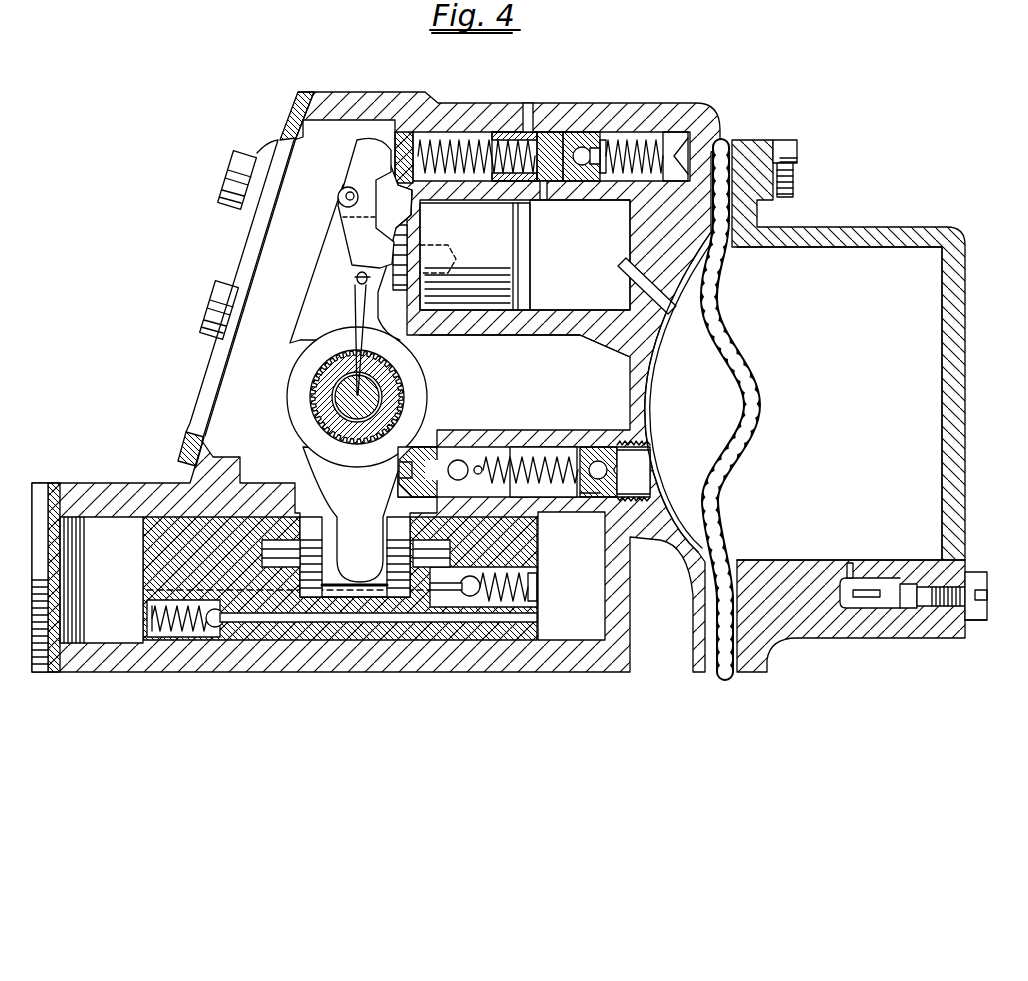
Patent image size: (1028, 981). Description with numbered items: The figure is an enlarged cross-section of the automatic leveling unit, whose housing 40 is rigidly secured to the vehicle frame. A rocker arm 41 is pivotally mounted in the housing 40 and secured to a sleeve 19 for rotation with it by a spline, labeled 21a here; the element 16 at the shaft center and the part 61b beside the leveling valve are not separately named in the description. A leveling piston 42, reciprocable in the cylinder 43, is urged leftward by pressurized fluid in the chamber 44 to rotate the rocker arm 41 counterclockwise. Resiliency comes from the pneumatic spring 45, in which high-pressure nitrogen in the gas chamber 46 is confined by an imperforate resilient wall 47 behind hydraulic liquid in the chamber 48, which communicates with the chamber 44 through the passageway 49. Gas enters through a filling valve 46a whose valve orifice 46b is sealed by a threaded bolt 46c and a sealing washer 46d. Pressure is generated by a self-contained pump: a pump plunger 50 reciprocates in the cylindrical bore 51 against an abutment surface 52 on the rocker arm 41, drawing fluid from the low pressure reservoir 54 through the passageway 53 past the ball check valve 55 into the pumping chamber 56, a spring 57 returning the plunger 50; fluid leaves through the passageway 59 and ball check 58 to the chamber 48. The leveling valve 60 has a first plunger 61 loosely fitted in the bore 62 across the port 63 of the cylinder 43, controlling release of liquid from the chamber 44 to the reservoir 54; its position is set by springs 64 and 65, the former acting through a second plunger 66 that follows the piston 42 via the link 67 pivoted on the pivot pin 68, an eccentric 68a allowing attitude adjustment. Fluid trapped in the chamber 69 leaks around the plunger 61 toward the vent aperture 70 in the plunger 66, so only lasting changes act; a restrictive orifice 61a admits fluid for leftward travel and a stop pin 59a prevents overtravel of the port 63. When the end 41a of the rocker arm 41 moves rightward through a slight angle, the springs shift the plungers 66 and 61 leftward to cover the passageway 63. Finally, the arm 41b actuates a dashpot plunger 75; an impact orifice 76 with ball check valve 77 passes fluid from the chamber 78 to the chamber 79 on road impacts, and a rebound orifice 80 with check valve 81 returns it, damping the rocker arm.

The housing 40 is at (683, 130).
The low pressure reservoir 54 is at (272, 445).
The second plunger 66 is at (425, 132).
The spring 64 is at (452, 150).
The bore 62 is at (500, 134).
The stop pin 59a is at (528, 120).
The leveling valve 60 is at (553, 128).
The first plunger 61 is at (564, 130).
The valve body 61b is at (584, 145).
The restrictive orifice 61a is at (583, 165).
The port 63 is at (545, 200).
The spring 65 is at (638, 137).
The chamber 44 is at (568, 272).
The piston 42 is at (495, 315).
The cylinder 43 is at (583, 312).
The passageway 49 is at (640, 290).
The rocker arm 41 is at (369, 366).
The end of rocker arm 41a is at (325, 292).
The arm 41b is at (345, 500).
The vent aperture 70 is at (398, 188).
The sleeve 19 is at (316, 372).
The shaft 21a is at (336, 400).
The pin 16 is at (380, 396).
The link 67 is at (360, 157).
The pivot pin 68 is at (338, 199).
The eccentric adjusting pivot 68a is at (345, 218).
The passageway 53 is at (435, 460).
The pump plunger 50 is at (410, 470).
The ball check valve 55 is at (462, 460).
The spring 57 is at (545, 458).
The pumping chamber 56 is at (566, 450).
The ball check 58 is at (605, 460).
The passageway 59 is at (583, 495).
The cylindrical bore 51 is at (558, 498).
The chamber 79 is at (585, 630).
The dashpot plunger 75 is at (345, 642).
The chamber 78 is at (115, 640).
The check valve 81 is at (212, 628).
The rebound orifice 80 is at (285, 612).
The ball check valve 77 is at (470, 596).
The impact orifice 76 is at (440, 592).
The abutment surface 52 is at (395, 477).
The chamber 48 is at (690, 410).
The imperforate resilient confining wall 47 is at (736, 484).
The pneumatic spring 45 is at (970, 226).
The gas chamber 46 is at (826, 422).
The chamber 69 is at (770, 147).
The valve orifice 46b is at (890, 606).
The filling valve 46a is at (907, 608).
The threaded bolt 46c is at (984, 572).
The sealing washer 46d is at (978, 621).